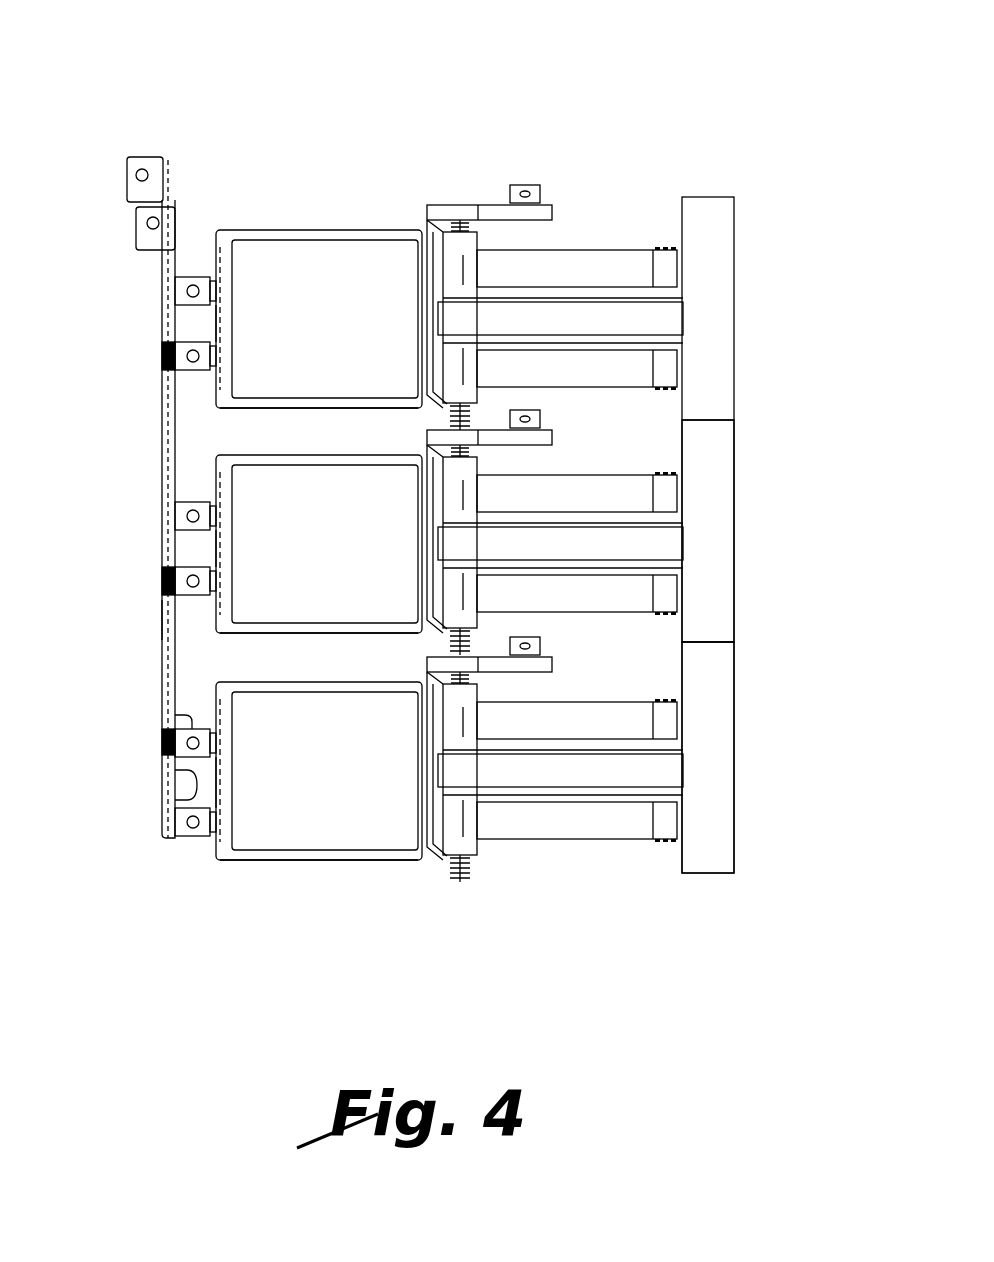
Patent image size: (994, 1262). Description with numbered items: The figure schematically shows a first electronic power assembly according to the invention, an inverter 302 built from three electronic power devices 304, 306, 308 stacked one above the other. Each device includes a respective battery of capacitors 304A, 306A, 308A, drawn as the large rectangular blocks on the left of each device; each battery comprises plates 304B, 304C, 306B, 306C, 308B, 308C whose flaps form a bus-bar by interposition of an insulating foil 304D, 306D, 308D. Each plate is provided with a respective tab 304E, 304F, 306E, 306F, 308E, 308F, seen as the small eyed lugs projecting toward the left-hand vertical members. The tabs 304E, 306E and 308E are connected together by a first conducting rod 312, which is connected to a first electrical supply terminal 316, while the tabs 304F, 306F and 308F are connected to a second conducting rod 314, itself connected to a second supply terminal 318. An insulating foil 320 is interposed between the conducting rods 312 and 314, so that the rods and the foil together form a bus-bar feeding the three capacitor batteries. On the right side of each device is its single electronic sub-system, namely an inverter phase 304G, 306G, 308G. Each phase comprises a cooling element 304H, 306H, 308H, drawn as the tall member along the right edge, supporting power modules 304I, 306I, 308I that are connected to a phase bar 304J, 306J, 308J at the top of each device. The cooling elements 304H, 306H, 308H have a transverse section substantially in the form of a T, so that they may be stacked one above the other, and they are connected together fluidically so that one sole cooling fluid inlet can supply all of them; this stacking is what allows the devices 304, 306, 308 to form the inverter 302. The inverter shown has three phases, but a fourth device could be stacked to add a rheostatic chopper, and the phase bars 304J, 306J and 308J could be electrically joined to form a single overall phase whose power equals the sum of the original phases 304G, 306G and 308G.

The inverter 302 is at (368, 106).
The electronic power device 304 is at (205, 249).
The battery of capacitors 304A is at (375, 260).
The plate 304B is at (343, 230).
The plate 304C is at (290, 407).
The insulating foil 304D is at (220, 322).
The tab 304E is at (185, 292).
The tab 304F is at (165, 358).
The inverter phase 304G is at (762, 268).
The cooling element 304H is at (718, 208).
The power modules 304I is at (645, 358).
The phase bar 304J is at (540, 205).
The electronic power device 306 is at (205, 452).
The battery of capacitors 306A is at (270, 483).
The plate 306B is at (382, 455).
The plate 306C is at (290, 632).
The insulating foil 306D is at (222, 548).
The tab 306E is at (196, 502).
The tab 306F is at (165, 580).
The inverter phase 306G is at (762, 540).
The cooling element 306H is at (718, 490).
The power modules 306I is at (633, 590).
The phase bar 306J is at (552, 438).
The electronic power device 308 is at (205, 672).
The battery of capacitors 308A is at (275, 705).
The plate 308B is at (386, 682).
The plate 308C is at (300, 862).
The insulating foil 308D is at (222, 775).
The tab 308E is at (196, 728).
The tab 308F is at (190, 835).
The inverter phase 308G is at (762, 782).
The cooling element 308H is at (718, 740).
The power modules 308I is at (627, 812).
The phase bar 308J is at (538, 666).
The first conducting rod 312 is at (178, 786).
The second conducting rod 314 is at (165, 395).
The first electrical supply terminal 316 is at (145, 243).
The second supply terminal 318 is at (130, 162).
The insulating foil 320 is at (165, 618).